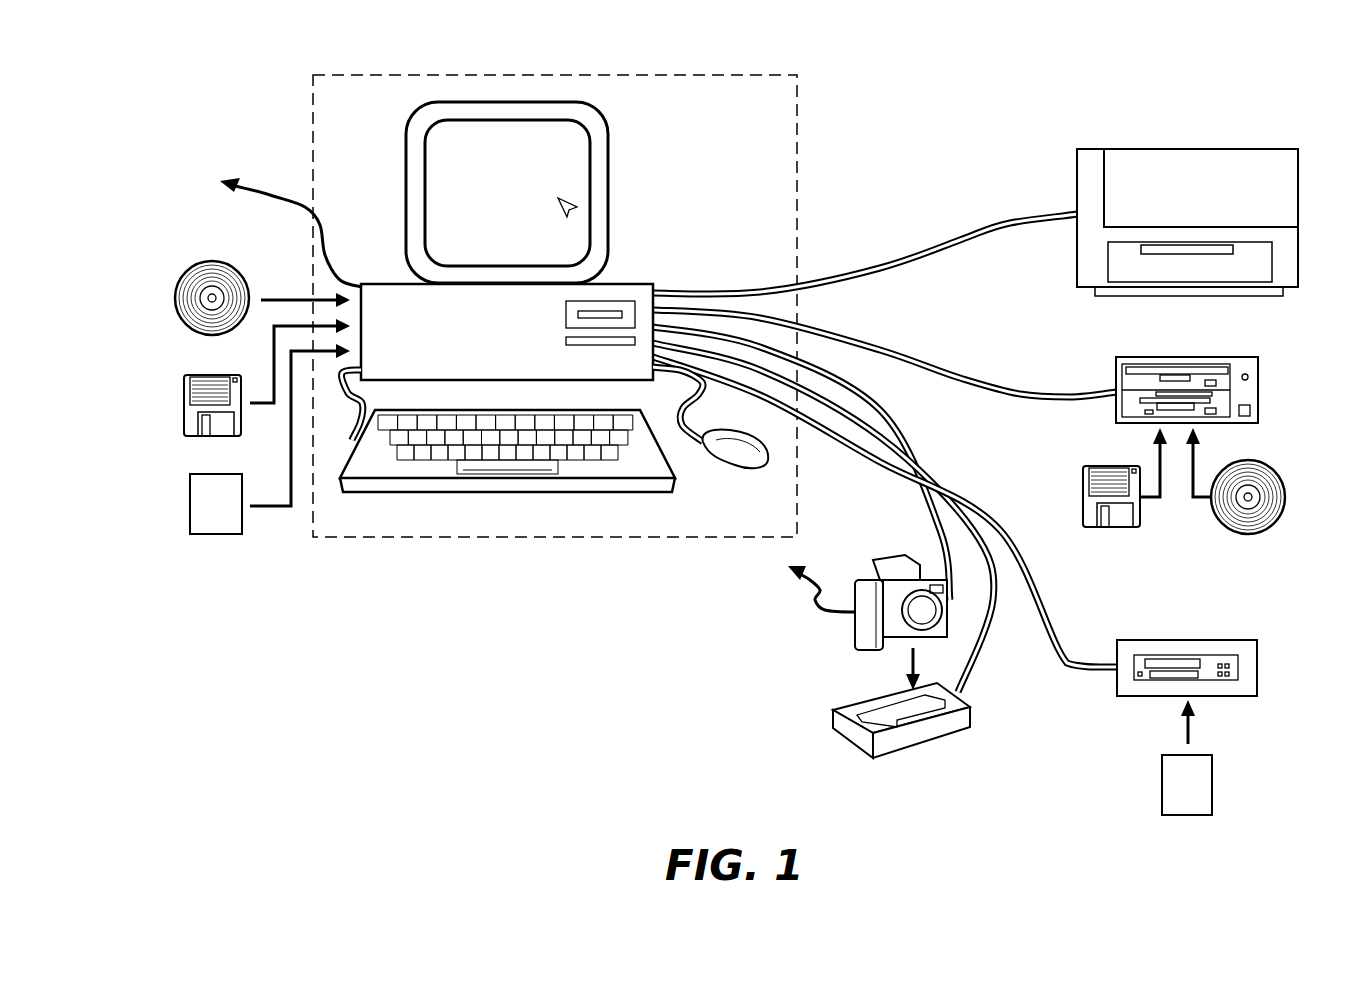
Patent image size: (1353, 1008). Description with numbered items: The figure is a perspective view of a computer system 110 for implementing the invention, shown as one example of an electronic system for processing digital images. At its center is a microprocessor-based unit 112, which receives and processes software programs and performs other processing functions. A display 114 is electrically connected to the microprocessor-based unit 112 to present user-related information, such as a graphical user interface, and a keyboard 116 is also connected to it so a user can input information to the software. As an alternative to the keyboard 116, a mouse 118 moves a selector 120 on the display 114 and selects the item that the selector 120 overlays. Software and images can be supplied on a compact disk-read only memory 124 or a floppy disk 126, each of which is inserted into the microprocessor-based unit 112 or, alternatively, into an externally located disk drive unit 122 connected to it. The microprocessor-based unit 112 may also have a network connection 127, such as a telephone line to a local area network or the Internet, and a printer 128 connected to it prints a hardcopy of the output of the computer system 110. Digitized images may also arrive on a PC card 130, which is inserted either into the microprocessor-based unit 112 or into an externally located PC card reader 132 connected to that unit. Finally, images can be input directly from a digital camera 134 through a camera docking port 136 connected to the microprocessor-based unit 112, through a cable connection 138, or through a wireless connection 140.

The computer system 110 is at (313, 126).
The microprocessor-based unit 112 is at (390, 283).
The display 114 is at (416, 110).
The keyboard 116 is at (426, 492).
The mouse 118 is at (716, 460).
The selector 120 is at (577, 207).
The externally located disk drive unit 122 is at (1262, 386).
The compact disk-read only memory (CD-ROM) 124 is at (175, 299).
The floppy disk 126 is at (184, 412).
The network connection 127 is at (270, 200).
The printer 128 is at (1181, 148).
The personal computer card (PC card) 130 is at (190, 508).
The externally located PC card reader 132 is at (1260, 664).
The digital camera 134 is at (900, 557).
The camera docking port 136 is at (833, 722).
The cable connection 138 is at (900, 486).
The wireless connection 140 is at (821, 598).